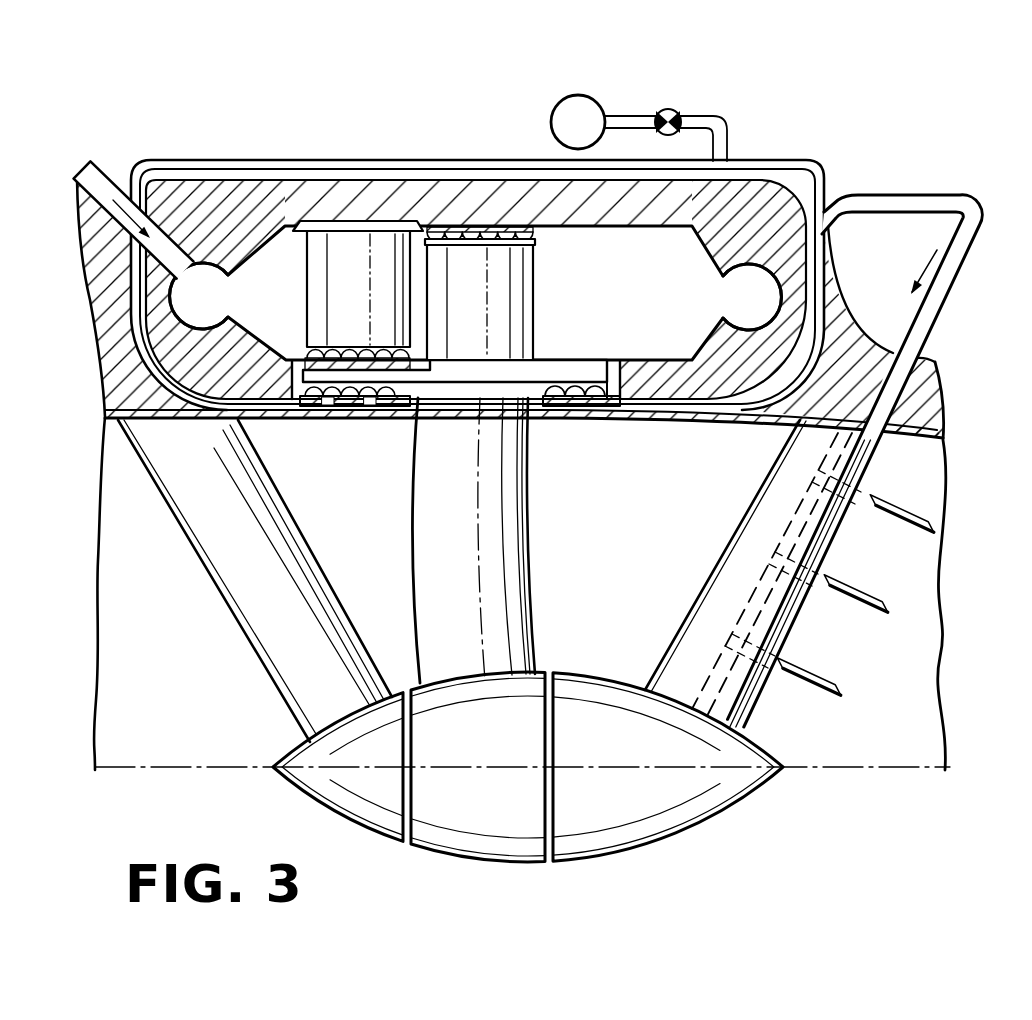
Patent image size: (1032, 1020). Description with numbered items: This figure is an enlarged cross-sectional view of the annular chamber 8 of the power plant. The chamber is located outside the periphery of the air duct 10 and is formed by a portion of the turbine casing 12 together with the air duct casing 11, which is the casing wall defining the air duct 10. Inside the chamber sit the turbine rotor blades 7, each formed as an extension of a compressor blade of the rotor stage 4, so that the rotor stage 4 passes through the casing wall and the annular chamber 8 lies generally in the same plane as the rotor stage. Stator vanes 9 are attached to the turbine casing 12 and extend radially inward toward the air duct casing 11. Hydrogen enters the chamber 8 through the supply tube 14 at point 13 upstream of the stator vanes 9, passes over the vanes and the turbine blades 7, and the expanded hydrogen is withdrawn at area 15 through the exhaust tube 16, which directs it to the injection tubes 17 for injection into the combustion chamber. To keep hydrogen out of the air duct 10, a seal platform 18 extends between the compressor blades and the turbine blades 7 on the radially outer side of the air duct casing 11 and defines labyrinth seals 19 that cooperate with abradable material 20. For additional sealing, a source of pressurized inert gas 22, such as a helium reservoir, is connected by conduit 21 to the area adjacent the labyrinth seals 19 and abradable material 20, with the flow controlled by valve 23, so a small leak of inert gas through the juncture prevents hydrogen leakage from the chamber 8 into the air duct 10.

The rotor stage 4 is at (498, 597).
The turbine rotor blade 7 is at (452, 270).
The annular chamber 8 is at (616, 299).
The stator vanes 9 is at (342, 247).
The air duct 10 is at (847, 747).
The air duct casing 11 is at (757, 412).
The turbine casing 12 is at (486, 195).
The point 13 is at (206, 273).
The supply tube 14 is at (93, 183).
The area 15 is at (750, 278).
The exhaust tube 16 is at (906, 200).
The injection tubes 17 is at (783, 597).
The seal platform 18 is at (583, 370).
The labyrinth seals 19 is at (327, 408).
The abradable material 20 is at (372, 403).
The conduit 21 is at (267, 420).
The source of pressurized inert gas 22 is at (577, 112).
The valve 23 is at (672, 108).